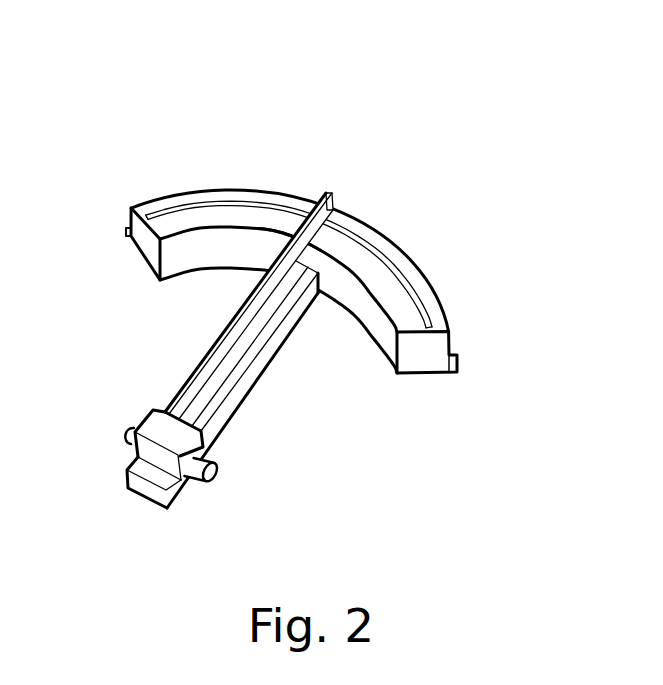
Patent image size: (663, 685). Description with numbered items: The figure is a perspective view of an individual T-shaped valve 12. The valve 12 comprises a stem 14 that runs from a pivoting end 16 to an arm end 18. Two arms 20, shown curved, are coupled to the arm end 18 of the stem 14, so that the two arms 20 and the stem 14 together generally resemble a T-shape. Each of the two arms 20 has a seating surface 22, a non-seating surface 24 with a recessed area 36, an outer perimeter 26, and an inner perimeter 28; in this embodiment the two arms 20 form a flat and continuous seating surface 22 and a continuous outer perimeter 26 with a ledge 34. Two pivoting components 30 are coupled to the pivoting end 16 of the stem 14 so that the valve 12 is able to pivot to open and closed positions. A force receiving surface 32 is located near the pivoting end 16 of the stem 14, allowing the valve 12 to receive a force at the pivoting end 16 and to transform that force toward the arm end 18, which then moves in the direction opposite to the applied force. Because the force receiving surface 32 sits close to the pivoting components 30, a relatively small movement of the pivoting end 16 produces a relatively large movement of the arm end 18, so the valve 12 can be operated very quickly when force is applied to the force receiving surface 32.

The T-shaped valve 12 is at (404, 88).
The stem 14 is at (243, 345).
The pivoting end 16 is at (151, 414).
The arm end 18 is at (332, 192).
The arms 20 is at (201, 215).
The seating surface 22 is at (130, 240).
The non-seating surface 24 is at (182, 221).
The outer perimeter 26 is at (245, 191).
The inner perimeter 28 is at (215, 265).
The pivoting component 30 is at (127, 438).
The force receiving surface 32 is at (157, 478).
The ledge 34 is at (129, 231).
The recessed area 36 is at (290, 222).